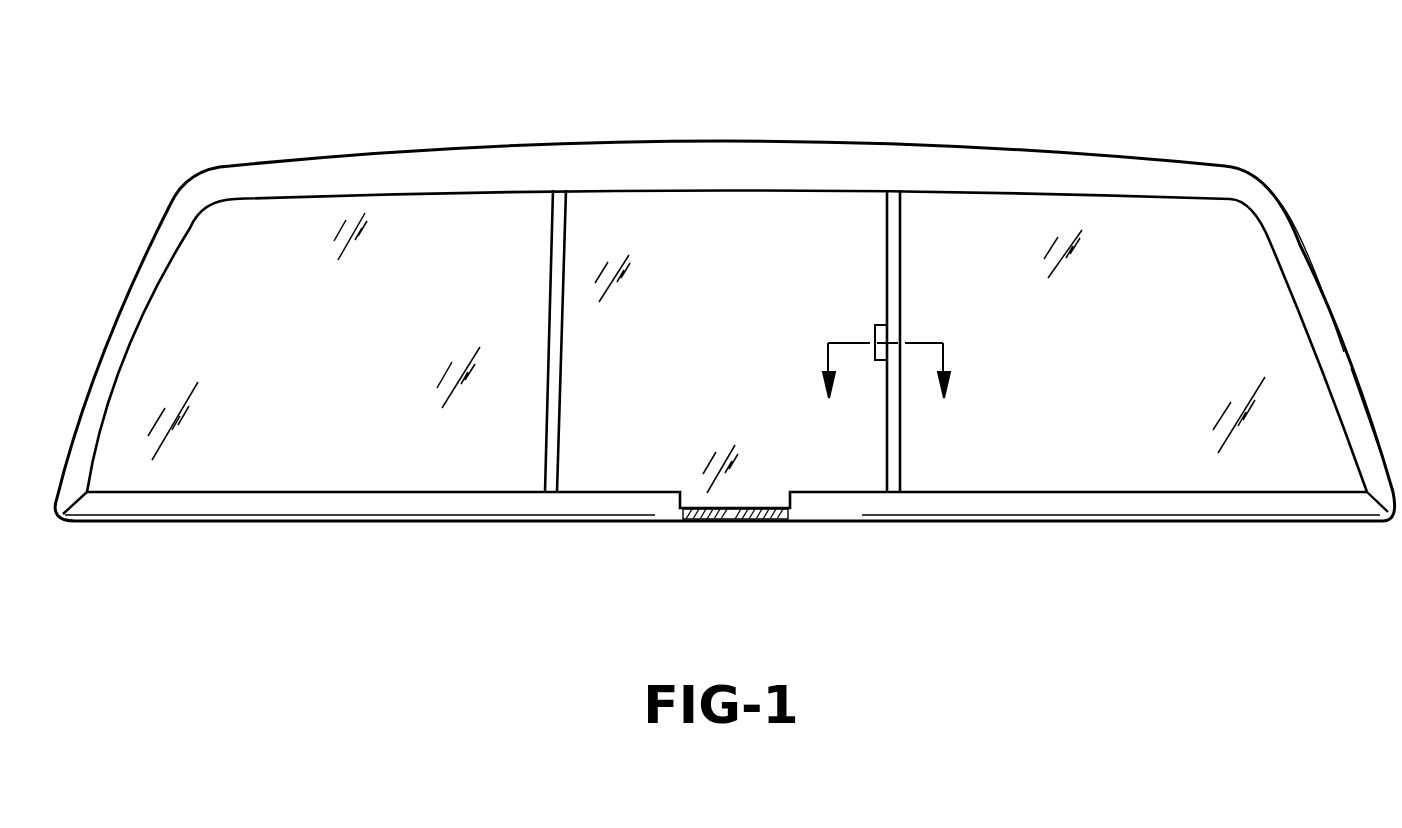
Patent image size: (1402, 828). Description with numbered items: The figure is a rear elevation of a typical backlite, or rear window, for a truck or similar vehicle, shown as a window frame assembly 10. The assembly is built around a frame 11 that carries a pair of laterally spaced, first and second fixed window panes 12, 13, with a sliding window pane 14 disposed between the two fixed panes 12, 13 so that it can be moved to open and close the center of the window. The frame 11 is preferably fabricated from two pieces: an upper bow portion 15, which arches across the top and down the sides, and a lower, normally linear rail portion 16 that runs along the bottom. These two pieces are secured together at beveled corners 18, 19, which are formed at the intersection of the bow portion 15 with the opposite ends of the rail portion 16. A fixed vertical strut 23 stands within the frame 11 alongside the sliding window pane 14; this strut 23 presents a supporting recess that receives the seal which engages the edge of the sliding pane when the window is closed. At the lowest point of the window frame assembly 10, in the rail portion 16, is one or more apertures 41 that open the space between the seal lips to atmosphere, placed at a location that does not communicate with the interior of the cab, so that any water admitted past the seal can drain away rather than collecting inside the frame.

The window frame assembly 10 is at (1156, 104).
The frame 11 is at (823, 143).
The first fixed window pane 12 is at (357, 341).
The second fixed window pane 13 is at (1126, 341).
The sliding window pane 14 is at (744, 341).
The upper bow portion 15 is at (672, 176).
The lower rail portion 16 is at (843, 503).
The beveled corner 18 is at (68, 512).
The beveled corner 19 is at (1382, 512).
The fixed vertical strut 23 is at (893, 247).
The aperture 41 is at (730, 522).